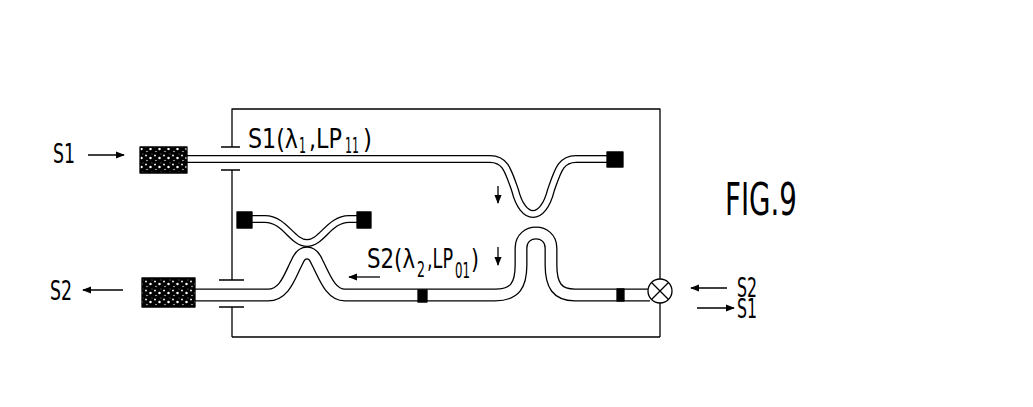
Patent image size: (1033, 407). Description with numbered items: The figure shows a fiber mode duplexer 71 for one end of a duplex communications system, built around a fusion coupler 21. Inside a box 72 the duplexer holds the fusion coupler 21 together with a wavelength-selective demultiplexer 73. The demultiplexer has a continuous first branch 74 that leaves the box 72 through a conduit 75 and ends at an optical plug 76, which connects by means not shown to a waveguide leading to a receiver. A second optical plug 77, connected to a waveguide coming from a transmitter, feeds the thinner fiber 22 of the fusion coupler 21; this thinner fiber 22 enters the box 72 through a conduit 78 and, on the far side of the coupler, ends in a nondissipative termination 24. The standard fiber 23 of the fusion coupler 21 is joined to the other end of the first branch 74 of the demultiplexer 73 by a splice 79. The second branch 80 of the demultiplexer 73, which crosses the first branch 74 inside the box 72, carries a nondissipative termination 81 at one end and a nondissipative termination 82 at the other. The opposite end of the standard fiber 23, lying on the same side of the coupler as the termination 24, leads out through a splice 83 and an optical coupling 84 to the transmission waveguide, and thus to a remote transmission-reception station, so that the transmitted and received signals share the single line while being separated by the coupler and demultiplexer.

The fusion coupler 21 is at (544, 152).
The thinner fiber 22 is at (474, 156).
The standard fiber 23 is at (497, 296).
The nondissipative termination 24 is at (623, 158).
The fiber mode duplexer 71 is at (328, 104).
The box 72 is at (405, 326).
The wavelength-selective demultiplexer 73 is at (314, 300).
The first branch 74 is at (277, 301).
The conduit 75 is at (227, 309).
The optical plug 76 is at (158, 307).
The optical plug 77 is at (163, 147).
The conduit 78 is at (220, 143).
The splice 79 is at (427, 302).
The second branch 80 is at (313, 227).
The nondissipative termination 81 is at (251, 212).
The nondissipative termination 82 is at (371, 212).
The splice 83 is at (620, 302).
The optical coupling 84 is at (666, 304).